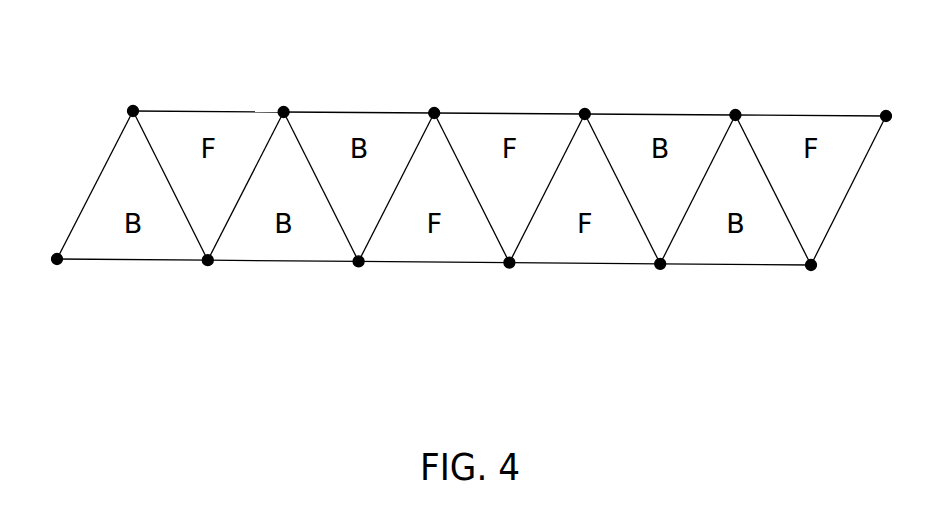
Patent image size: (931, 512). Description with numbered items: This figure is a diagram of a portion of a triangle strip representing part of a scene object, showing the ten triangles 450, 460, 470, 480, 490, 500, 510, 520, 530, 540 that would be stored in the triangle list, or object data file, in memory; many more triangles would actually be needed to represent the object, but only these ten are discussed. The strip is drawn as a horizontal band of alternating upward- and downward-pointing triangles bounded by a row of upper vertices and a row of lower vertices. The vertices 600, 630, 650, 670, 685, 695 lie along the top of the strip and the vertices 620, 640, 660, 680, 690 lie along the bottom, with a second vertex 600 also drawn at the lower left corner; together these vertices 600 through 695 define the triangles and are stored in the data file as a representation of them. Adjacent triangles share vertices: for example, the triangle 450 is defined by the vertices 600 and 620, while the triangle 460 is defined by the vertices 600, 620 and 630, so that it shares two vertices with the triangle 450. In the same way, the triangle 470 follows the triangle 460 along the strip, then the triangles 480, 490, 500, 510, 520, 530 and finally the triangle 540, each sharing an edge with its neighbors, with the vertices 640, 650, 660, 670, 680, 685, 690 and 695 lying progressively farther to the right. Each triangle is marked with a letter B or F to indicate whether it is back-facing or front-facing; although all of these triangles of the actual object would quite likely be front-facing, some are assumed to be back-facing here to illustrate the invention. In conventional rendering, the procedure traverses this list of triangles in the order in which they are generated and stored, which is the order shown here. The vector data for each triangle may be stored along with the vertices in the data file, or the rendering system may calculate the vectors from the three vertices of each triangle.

The vertex 600 is at (133, 100).
The triangle 460 is at (208, 100).
The vertex 630 is at (285, 101).
The triangle 480 is at (361, 102).
The vertex 650 is at (437, 102).
The triangle 500 is at (514, 102).
The vertex 670 is at (590, 103).
The triangle 520 is at (665, 104).
The vertex 685 is at (737, 104).
The triangle 540 is at (812, 104).
The vertex 695 is at (887, 105).
The triangle 450 is at (132, 271).
The vertex 620 is at (207, 271).
The triangle 470 is at (283, 272).
The vertex 640 is at (359, 272).
The triangle 490 is at (436, 273).
The vertex 660 is at (512, 274).
The triangle 510 is at (587, 274).
The vertex 680 is at (662, 275).
The triangle 530 is at (734, 275).
The vertex 690 is at (810, 276).